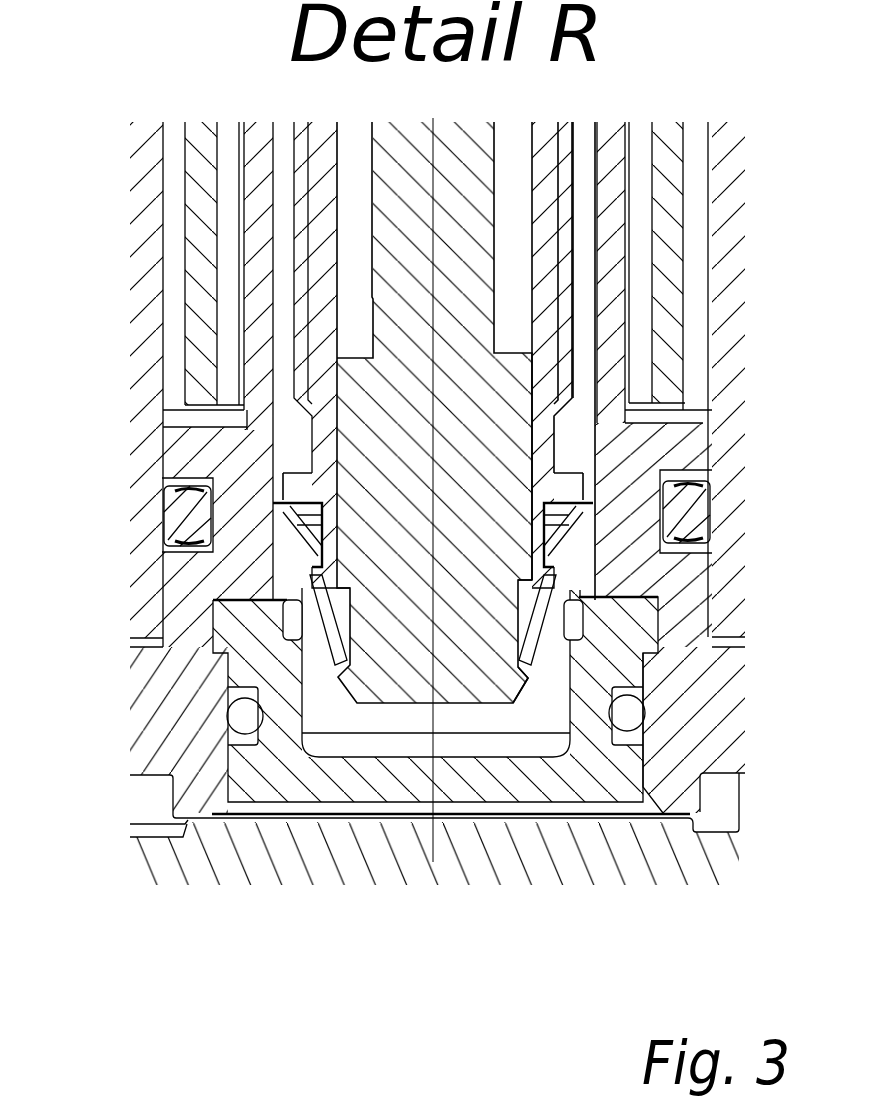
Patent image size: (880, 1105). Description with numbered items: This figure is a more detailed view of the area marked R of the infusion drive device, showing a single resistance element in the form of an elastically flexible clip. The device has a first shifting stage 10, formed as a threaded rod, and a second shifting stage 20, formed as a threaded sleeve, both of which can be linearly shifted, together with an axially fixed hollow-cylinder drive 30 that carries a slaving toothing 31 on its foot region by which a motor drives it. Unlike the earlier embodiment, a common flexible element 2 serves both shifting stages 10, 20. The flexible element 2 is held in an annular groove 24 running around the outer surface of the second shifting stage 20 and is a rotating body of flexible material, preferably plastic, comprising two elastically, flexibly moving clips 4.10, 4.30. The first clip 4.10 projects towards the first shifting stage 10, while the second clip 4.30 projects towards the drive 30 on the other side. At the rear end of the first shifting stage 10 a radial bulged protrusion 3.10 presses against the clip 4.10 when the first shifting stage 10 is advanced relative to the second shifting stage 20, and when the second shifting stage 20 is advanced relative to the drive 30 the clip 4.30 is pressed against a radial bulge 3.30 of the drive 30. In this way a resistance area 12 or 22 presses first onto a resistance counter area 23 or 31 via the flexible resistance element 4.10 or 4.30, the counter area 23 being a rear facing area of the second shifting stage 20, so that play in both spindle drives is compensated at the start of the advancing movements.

The first shifting stage 10 is at (460, 145).
The second shifting stage 20 is at (545, 171).
The rotary drive member (drive) 30 is at (608, 215).
The slaving toothing / resistance counter area 31 is at (277, 502).
The resistance area 22 is at (280, 540).
The annular groove 24 is at (593, 488).
The flexible element 2 is at (295, 578).
The resistance area 12 is at (537, 647).
The resistance counter area 23 is at (528, 673).
The radial bulged protrusion 3.10 is at (347, 677).
The radial bulge 3.30 is at (272, 510).
The first clip 4.10 is at (537, 648).
The second clip 4.30 is at (585, 520).